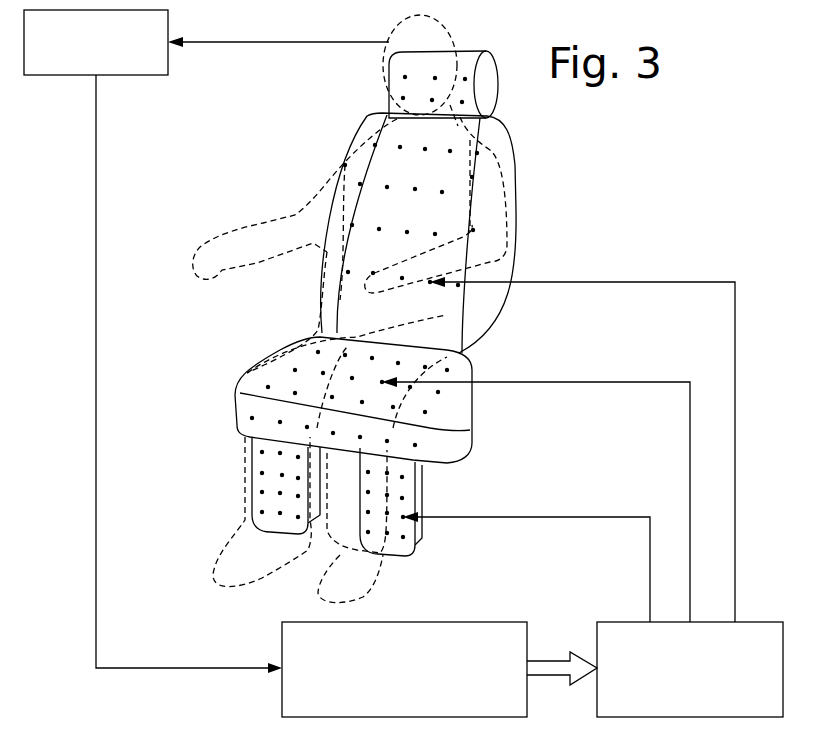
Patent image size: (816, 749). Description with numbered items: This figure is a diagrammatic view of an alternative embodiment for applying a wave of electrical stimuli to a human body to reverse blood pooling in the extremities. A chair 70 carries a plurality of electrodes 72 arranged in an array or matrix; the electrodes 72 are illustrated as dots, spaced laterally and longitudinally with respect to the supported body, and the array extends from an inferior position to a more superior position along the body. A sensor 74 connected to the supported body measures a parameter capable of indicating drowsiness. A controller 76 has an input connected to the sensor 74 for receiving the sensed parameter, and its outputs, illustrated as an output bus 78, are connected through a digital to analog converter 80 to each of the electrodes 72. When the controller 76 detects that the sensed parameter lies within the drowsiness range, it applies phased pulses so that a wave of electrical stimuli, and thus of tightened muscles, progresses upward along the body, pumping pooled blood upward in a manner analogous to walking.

The chair 70 is at (517, 205).
The electrodes 72 is at (450, 151).
The sensor 74 is at (80, 78).
The controller 76 is at (480, 622).
The output bus 78 is at (535, 660).
The digital to analog converter 80 is at (735, 622).